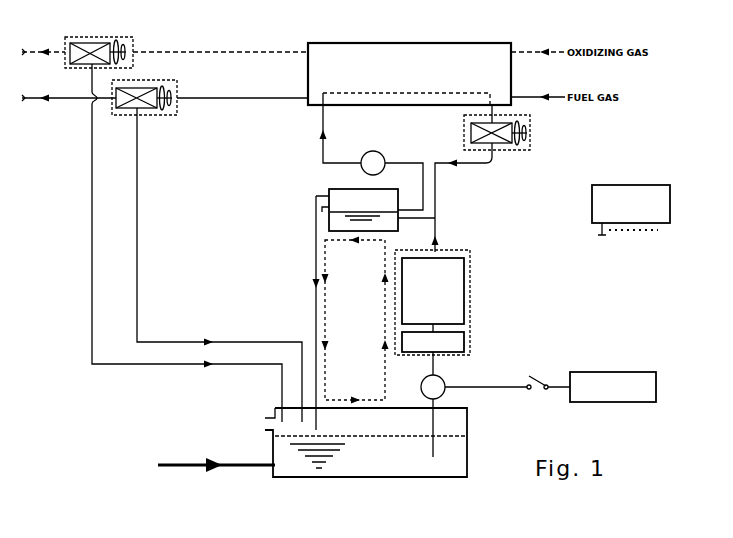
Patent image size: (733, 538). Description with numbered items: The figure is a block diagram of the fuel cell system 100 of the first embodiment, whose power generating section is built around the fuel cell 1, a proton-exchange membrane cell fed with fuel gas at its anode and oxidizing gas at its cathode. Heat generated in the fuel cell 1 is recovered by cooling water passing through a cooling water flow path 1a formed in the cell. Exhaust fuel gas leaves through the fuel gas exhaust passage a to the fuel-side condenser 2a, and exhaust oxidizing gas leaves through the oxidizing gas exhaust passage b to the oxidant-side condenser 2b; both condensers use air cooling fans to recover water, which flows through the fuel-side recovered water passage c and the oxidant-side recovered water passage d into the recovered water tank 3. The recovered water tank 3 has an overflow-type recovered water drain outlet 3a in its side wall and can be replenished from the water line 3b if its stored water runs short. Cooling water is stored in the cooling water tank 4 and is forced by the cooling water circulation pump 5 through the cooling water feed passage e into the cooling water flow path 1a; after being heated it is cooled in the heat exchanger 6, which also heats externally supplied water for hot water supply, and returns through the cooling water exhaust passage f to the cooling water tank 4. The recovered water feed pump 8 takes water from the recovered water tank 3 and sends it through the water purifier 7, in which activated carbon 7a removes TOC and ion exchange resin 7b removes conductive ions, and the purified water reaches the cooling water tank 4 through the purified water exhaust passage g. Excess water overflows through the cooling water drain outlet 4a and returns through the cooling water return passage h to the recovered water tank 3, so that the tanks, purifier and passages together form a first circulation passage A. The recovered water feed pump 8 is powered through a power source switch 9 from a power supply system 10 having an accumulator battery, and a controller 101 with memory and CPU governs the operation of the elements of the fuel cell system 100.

The fuel cell 1 is at (406, 107).
The cooling water flow path 1a is at (442, 107).
The fuel-side condenser 2a is at (177, 80).
The oxidant-side condenser 2b is at (126, 36).
The recovered water tank 3 is at (468, 424).
The recovered water drain outlet 3a is at (265, 415).
The water line 3b is at (232, 466).
The cooling water tank 4 is at (344, 188).
The cooling water drain outlet 4a is at (317, 197).
The cooling water circulation pump 5 is at (373, 150).
The heat exchanger 6 is at (531, 143).
The water purifier 7 is at (470, 250).
The activated carbon 7a is at (470, 347).
The ion exchange resin 7b is at (465, 290).
The recovered water feed pump 8 is at (445, 376).
The power source switch 9 is at (543, 370).
The power supply system 10 is at (657, 376).
The fuel cell system 100 is at (670, 58).
The controller 101 is at (673, 195).
The fuel gas exhaust passage a is at (264, 96).
The oxidizing gas exhaust passage b is at (264, 50).
The fuel-side recovered water passage c is at (135, 177).
The oxidant-side recovered water passage d is at (91, 177).
The cooling water feed passage e is at (320, 145).
The cooling water exhaust passage f is at (493, 163).
The purified water exhaust passage g is at (437, 230).
The cooling water return passage h is at (314, 252).
The first circulation passage A is at (330, 320).